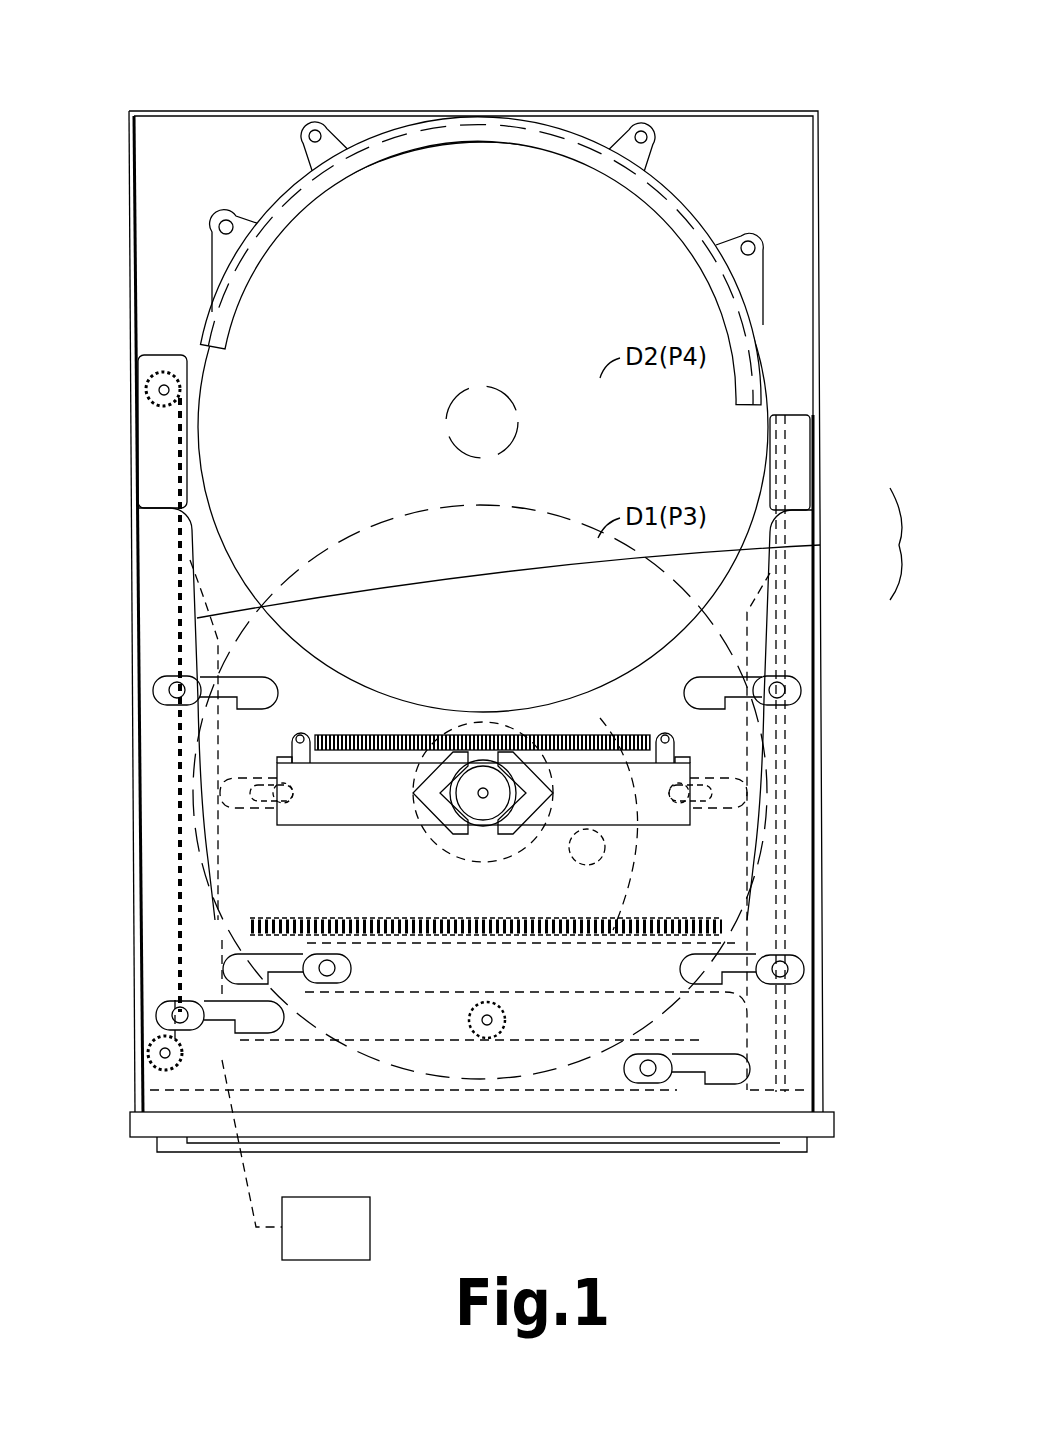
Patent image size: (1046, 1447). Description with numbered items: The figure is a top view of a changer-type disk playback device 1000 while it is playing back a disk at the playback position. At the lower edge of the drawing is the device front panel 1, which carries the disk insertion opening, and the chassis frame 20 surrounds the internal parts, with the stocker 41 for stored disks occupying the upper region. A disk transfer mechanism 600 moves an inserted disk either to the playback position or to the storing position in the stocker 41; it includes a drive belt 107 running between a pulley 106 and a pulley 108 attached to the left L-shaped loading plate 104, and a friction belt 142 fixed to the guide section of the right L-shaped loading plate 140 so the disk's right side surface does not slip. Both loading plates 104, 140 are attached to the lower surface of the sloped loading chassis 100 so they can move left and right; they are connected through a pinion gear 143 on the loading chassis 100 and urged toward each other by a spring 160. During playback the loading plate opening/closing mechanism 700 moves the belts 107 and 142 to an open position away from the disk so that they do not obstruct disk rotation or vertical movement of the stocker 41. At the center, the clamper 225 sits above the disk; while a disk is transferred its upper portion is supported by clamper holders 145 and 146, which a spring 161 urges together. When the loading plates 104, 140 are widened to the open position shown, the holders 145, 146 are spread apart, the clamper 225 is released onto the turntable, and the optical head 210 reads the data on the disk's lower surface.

The changer-type disk playback device 1000 is at (492, 88).
The chassis frame 20 is at (681, 112).
The device front panel 1 is at (668, 1137).
The stocker 41 is at (683, 197).
The pulley 108 is at (150, 378).
The drive belt 107 is at (178, 795).
The disk transfer mechanism 600 is at (882, 494).
The L-shaped loading plate 140 is at (776, 583).
The friction belt 142 is at (793, 648).
The L-shaped loading plate 104 is at (818, 547).
The loading chassis 100 is at (205, 540).
The optical head 210 is at (600, 890).
The spring 161 is at (372, 737).
The clamper holder 145 is at (380, 808).
The clamper holder 146 is at (653, 800).
The clamper 225 is at (443, 848).
The spring 160 is at (340, 920).
The pinion gear 143 is at (487, 1000).
The pulley 106 is at (150, 1058).
The loading plate opening/closing mechanism 700 is at (296, 1160).